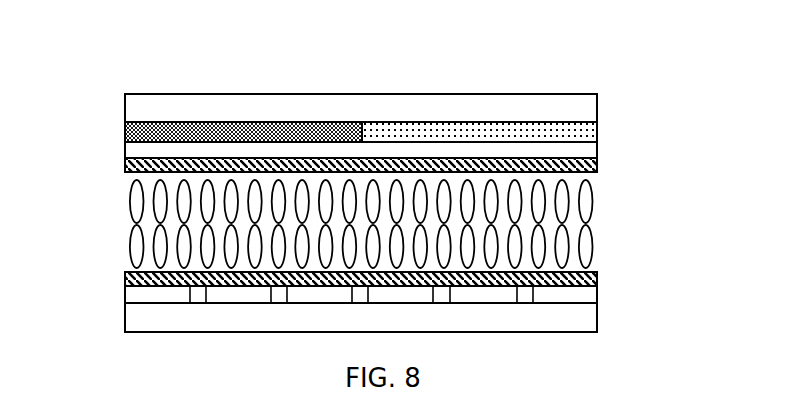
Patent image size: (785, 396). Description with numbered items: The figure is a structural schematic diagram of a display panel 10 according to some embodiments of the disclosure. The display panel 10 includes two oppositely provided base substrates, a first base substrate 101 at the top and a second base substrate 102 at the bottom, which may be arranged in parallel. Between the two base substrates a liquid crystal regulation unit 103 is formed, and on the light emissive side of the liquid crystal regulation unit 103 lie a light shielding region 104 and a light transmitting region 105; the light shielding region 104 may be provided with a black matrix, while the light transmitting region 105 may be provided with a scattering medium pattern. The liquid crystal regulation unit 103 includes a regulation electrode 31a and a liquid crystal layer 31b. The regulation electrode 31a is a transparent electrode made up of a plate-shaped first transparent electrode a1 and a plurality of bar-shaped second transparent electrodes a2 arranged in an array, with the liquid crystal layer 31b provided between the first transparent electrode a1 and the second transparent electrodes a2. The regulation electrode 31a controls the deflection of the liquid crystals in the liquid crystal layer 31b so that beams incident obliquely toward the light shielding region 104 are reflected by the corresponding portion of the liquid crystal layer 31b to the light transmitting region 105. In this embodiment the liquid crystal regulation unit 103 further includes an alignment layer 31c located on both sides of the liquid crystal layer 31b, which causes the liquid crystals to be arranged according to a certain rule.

The display panel 10 is at (112, 38).
The first base substrate 101 is at (124, 106).
The second base substrate 102 is at (124, 322).
The liquid crystal regulation unit 103 is at (400, 223).
The light shielding region 104 is at (243, 92).
The light transmitting region 105 is at (488, 92).
The regulation electrode 31a is at (698, 222).
The liquid crystal layer 31b is at (602, 177).
The alignment layer 31c is at (598, 165).
The first transparent electrode a1 is at (598, 150).
The second transparent electrode a2 is at (598, 293).